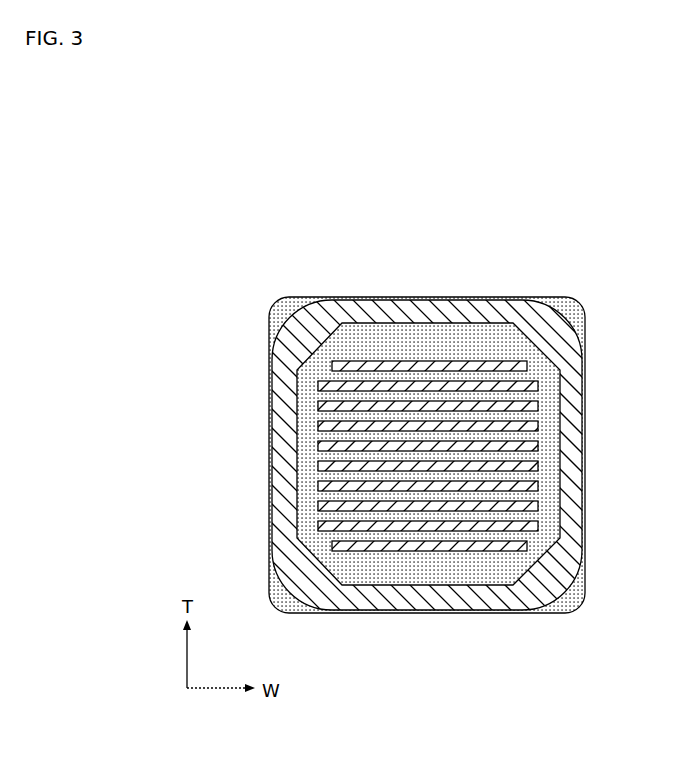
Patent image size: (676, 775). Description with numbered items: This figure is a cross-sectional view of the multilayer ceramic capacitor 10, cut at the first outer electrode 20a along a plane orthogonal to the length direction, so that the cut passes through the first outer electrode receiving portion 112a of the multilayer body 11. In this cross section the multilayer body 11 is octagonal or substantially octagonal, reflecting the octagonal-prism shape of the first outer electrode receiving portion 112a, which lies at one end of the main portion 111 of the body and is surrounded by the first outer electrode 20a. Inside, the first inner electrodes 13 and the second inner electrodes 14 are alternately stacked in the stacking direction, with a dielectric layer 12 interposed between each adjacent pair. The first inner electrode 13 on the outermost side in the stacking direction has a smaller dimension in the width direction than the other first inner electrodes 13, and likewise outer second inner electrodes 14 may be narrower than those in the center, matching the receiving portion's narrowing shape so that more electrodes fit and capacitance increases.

The multilayer ceramic capacitor 10 is at (338, 407).
The multilayer body 11 is at (338, 399).
The main portion 111 is at (565, 292).
The first outer electrode receiving portion 112a is at (338, 421).
The dielectric layer 12 is at (388, 458).
The first inner electrode 13 is at (370, 398).
The second inner electrode 14 is at (388, 458).
The first outer electrode 20a is at (282, 435).